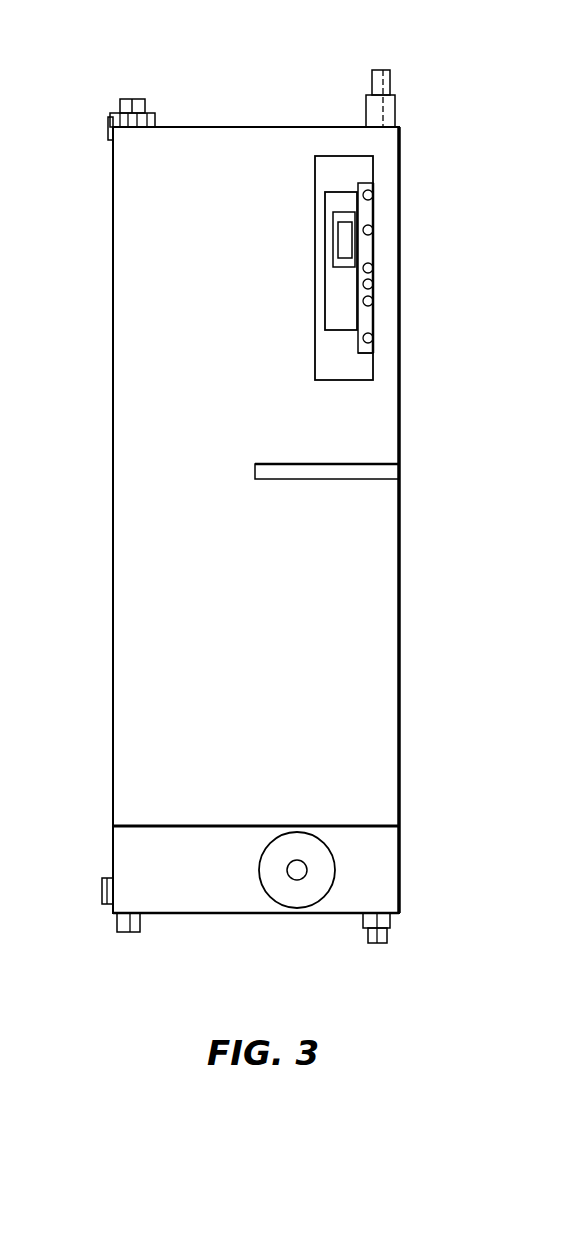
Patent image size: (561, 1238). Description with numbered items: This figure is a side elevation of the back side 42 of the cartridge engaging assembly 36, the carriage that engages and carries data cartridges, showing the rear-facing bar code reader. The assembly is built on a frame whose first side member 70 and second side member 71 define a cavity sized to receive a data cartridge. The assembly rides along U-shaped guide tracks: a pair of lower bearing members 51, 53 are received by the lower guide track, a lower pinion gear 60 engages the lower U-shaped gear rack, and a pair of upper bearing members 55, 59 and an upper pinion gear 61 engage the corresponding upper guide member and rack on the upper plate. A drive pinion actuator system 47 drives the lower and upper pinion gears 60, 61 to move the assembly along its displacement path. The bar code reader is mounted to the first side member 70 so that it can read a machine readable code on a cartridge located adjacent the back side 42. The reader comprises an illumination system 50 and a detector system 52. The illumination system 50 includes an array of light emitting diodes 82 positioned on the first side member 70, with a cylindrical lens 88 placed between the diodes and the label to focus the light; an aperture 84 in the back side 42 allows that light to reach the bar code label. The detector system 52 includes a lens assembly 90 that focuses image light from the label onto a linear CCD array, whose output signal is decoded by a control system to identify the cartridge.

The cartridge engaging assembly 36 is at (112, 282).
The back side 42 is at (266, 602).
The drive pinion actuator system 47 is at (281, 898).
The illumination system 50 is at (360, 354).
The lower bearing member 51 is at (128, 932).
The detector system 52 is at (325, 282).
The lower bearing member 53 is at (391, 919).
The upper bearing member 55 is at (132, 99).
The upper bearing member 59 is at (390, 85).
The lower pinion gear 60 is at (102, 887).
The upper pinion gear 61 is at (108, 124).
The first side member 70 is at (400, 566).
The second side member 71 is at (112, 575).
The light emitting diodes 82 is at (373, 284).
The aperture 84 is at (315, 347).
The cylindrical lens 88 is at (363, 186).
The lens assembly 90 is at (340, 214).